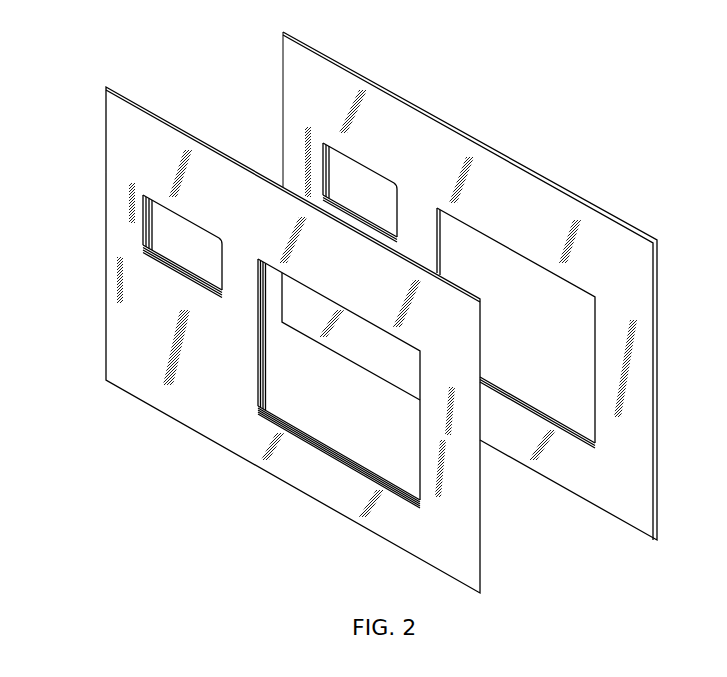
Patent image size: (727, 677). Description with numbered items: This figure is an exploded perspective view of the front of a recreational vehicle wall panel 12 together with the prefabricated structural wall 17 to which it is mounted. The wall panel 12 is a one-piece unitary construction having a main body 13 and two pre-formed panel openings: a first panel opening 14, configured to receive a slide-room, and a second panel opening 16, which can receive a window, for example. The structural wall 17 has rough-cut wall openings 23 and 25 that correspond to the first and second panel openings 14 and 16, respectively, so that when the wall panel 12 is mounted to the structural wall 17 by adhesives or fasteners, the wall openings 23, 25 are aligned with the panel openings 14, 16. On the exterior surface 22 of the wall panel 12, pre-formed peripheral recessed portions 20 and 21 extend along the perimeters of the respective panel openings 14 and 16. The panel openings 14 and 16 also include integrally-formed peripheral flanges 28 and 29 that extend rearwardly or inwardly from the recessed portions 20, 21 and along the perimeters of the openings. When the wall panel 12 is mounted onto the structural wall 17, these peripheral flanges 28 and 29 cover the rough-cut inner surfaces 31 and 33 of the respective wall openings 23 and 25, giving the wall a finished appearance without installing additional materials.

The wall panel 12 is at (132, 99).
The main body 13 is at (123, 147).
The first panel opening 14 is at (420, 456).
The second panel opening 16 is at (188, 217).
The structural wall 17 is at (447, 123).
The recessed portion 20 is at (259, 406).
The recessed portion 21 is at (150, 243).
The exterior surface 22 is at (145, 353).
The wall opening 23 is at (530, 256).
The wall opening 25 is at (377, 173).
The peripheral flange 28 is at (328, 440).
The peripheral flange 29 is at (197, 268).
The inner surface 31 is at (543, 410).
The inner surface 33 is at (335, 197).